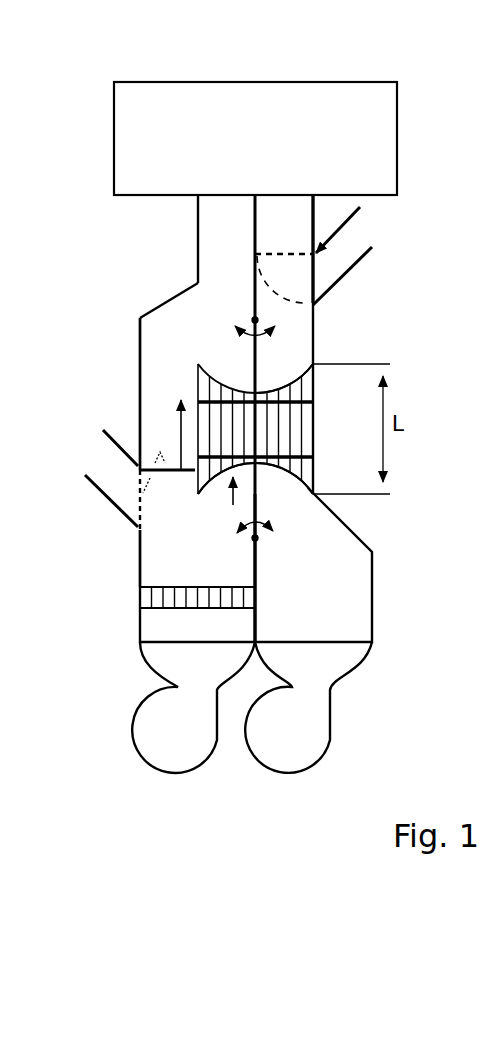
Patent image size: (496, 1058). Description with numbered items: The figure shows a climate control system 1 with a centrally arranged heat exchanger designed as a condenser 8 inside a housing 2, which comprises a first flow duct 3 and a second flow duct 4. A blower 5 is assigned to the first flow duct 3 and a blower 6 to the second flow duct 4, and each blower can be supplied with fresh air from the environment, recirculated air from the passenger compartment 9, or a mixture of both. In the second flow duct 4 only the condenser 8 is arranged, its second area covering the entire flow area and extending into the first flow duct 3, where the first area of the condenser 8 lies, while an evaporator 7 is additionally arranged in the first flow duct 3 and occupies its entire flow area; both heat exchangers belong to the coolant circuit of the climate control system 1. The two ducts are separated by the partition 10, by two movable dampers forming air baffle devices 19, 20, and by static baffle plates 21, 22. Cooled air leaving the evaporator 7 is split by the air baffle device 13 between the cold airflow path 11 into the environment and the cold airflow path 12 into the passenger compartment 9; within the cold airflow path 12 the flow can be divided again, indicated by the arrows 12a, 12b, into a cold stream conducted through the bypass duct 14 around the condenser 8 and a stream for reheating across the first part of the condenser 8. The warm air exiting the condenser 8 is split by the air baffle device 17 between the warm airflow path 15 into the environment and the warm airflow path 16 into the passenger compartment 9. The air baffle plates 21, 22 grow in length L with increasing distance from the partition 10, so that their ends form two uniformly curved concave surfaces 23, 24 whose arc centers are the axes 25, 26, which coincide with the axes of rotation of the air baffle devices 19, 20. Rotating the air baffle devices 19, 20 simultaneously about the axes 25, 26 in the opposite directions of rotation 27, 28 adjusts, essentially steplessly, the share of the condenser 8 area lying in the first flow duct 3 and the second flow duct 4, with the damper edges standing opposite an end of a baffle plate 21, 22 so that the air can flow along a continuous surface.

The climate control system 1 is at (435, 136).
The housing 2 is at (196, 262).
The first flow duct 3 is at (136, 356).
The second flow duct 4 is at (376, 569).
The blower 5 is at (157, 727).
The blower 6 is at (303, 723).
The evaporator 7 is at (245, 595).
The condenser 8 is at (306, 442).
The passenger compartment 9 is at (244, 142).
The partition 10 is at (257, 567).
The cold airflow path 11 is at (105, 467).
The cold airflow path 12 is at (196, 311).
The first partial flow 12a is at (177, 407).
The second partial flow 12b is at (231, 484).
The air baffle device 13 is at (158, 461).
The bypass duct 14 is at (162, 393).
The warm airflow path 15 is at (342, 250).
The warm airflow path 16 is at (293, 238).
The air baffle device 17 is at (313, 287).
The air baffle device 19 is at (253, 507).
The air baffle device 20 is at (252, 363).
The air baffle plate 21 is at (203, 475).
The air baffle plate 22 is at (199, 391).
The concave surface 23 is at (270, 473).
The concave surface 24 is at (267, 390).
The axis 25 is at (252, 539).
The axis 26 is at (253, 319).
The direction of rotation 27 is at (277, 327).
The direction of rotation 28 is at (278, 532).